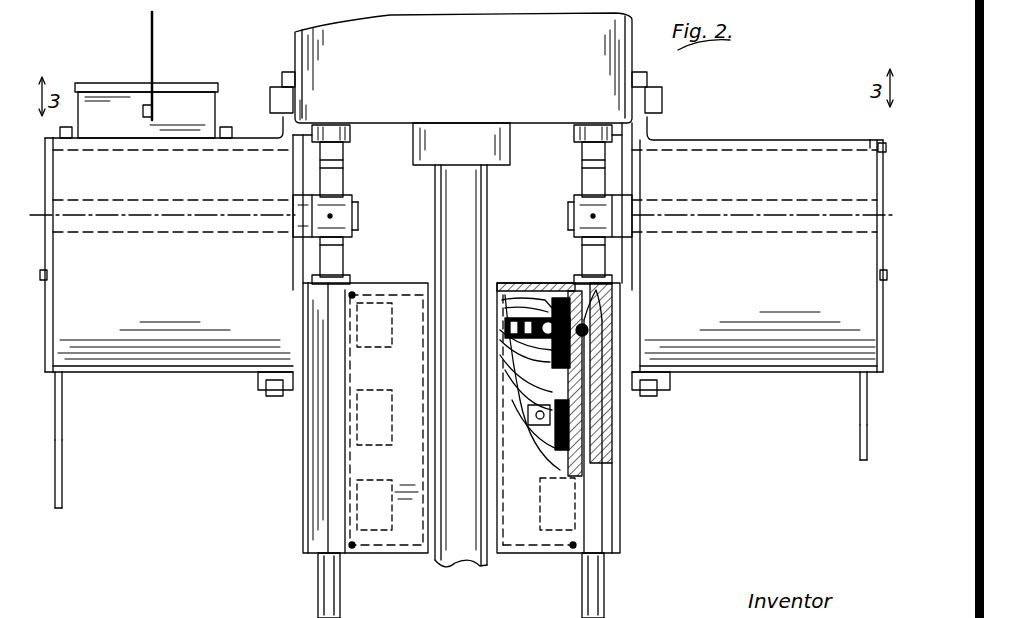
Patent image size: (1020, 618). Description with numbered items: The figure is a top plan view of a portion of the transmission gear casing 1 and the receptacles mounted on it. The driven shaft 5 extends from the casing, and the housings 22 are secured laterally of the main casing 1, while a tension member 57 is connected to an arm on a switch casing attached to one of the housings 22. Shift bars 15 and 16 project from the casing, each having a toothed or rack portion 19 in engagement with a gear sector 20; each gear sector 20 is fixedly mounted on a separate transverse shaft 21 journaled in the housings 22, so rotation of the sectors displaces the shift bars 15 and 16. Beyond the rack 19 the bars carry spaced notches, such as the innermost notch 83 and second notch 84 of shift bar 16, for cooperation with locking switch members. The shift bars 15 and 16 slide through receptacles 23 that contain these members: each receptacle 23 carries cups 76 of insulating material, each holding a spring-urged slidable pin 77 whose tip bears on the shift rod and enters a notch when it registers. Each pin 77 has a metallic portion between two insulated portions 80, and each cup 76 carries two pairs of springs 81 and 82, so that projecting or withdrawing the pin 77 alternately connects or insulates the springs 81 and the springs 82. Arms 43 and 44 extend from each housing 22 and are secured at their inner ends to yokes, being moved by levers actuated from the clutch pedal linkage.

The transmission gear casing 1 is at (300, 33).
The driven shaft 5 is at (491, 207).
The shift bar 15 is at (318, 566).
The shift bar 16 is at (584, 578).
The toothed or rack portion 19 is at (343, 158).
The gear sector 20 is at (344, 184).
The transverse shaft 21 is at (354, 232).
The housing 22 is at (212, 373).
The receptacle 23 is at (393, 554).
The arm 43 is at (62, 436).
The arm 44 is at (62, 508).
The tension member 57 is at (153, 30).
The cup 76 is at (566, 292).
The slidable pin 77 is at (585, 322).
The insulated portion 80 is at (506, 328).
The springs 81 is at (512, 308).
The springs 82 is at (506, 340).
The innermost notch 83 is at (592, 333).
The second notch 84 is at (610, 452).